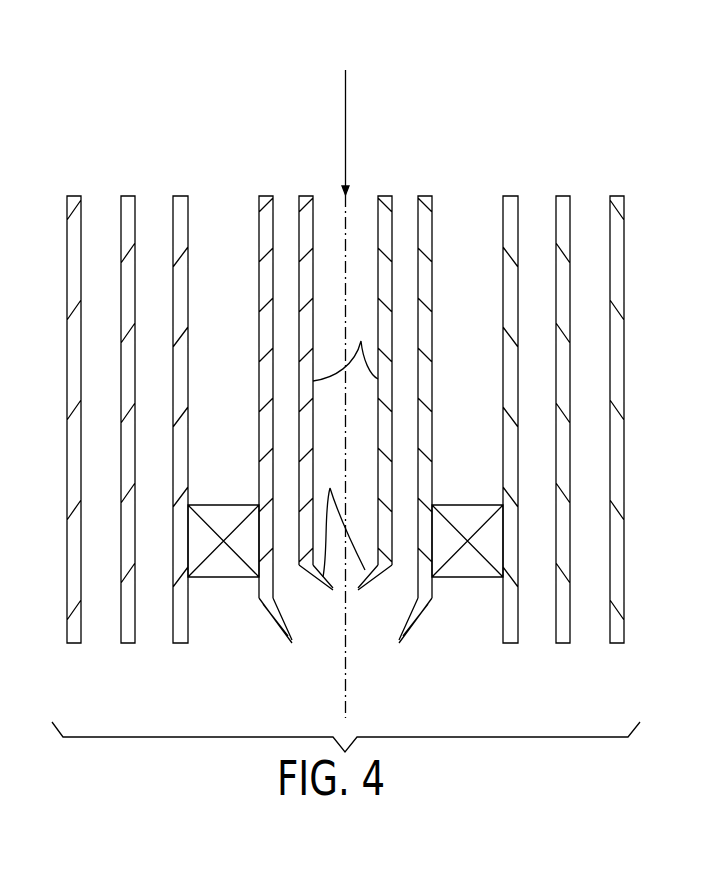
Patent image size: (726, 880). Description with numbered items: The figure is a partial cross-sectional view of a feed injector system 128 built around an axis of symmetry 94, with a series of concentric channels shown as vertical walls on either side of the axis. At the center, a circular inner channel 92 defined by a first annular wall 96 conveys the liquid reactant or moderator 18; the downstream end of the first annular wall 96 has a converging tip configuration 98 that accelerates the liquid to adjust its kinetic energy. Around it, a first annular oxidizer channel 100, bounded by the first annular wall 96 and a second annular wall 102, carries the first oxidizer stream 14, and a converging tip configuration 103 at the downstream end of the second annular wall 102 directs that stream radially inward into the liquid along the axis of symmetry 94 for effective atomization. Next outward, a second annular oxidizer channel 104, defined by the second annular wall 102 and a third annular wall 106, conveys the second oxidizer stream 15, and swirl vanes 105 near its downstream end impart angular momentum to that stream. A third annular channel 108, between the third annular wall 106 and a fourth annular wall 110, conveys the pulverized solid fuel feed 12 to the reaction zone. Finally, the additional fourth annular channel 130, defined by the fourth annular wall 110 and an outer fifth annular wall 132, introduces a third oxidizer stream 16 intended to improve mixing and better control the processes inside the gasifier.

The pulverized solid fuel feed 12 is at (153, 215).
The first oxidizer stream 14 is at (287, 280).
The second oxidizer stream 15 is at (225, 270).
The third oxidizer stream 16 is at (100, 272).
The liquid reactant or moderator 18 is at (345, 90).
The circular inner channel 92 is at (330, 195).
The axis of symmetry 94 is at (346, 660).
The first annular wall 96 is at (345, 346).
The converging tip configuration 98 is at (341, 516).
The first annular oxidizer channel 100 is at (278, 195).
The second annular wall 102 is at (259, 385).
The converging tip configuration 103 is at (403, 622).
The second annular oxidizer channel 104 is at (205, 200).
The swirl vanes 105 is at (222, 505).
The third annular wall 106 is at (188, 315).
The third annular channel 108 is at (143, 197).
The fourth annular wall 110 is at (121, 312).
The feed injector system 128 is at (153, 62).
The fourth annular channel 130 is at (90, 195).
The fifth annular wall 132 is at (67, 383).